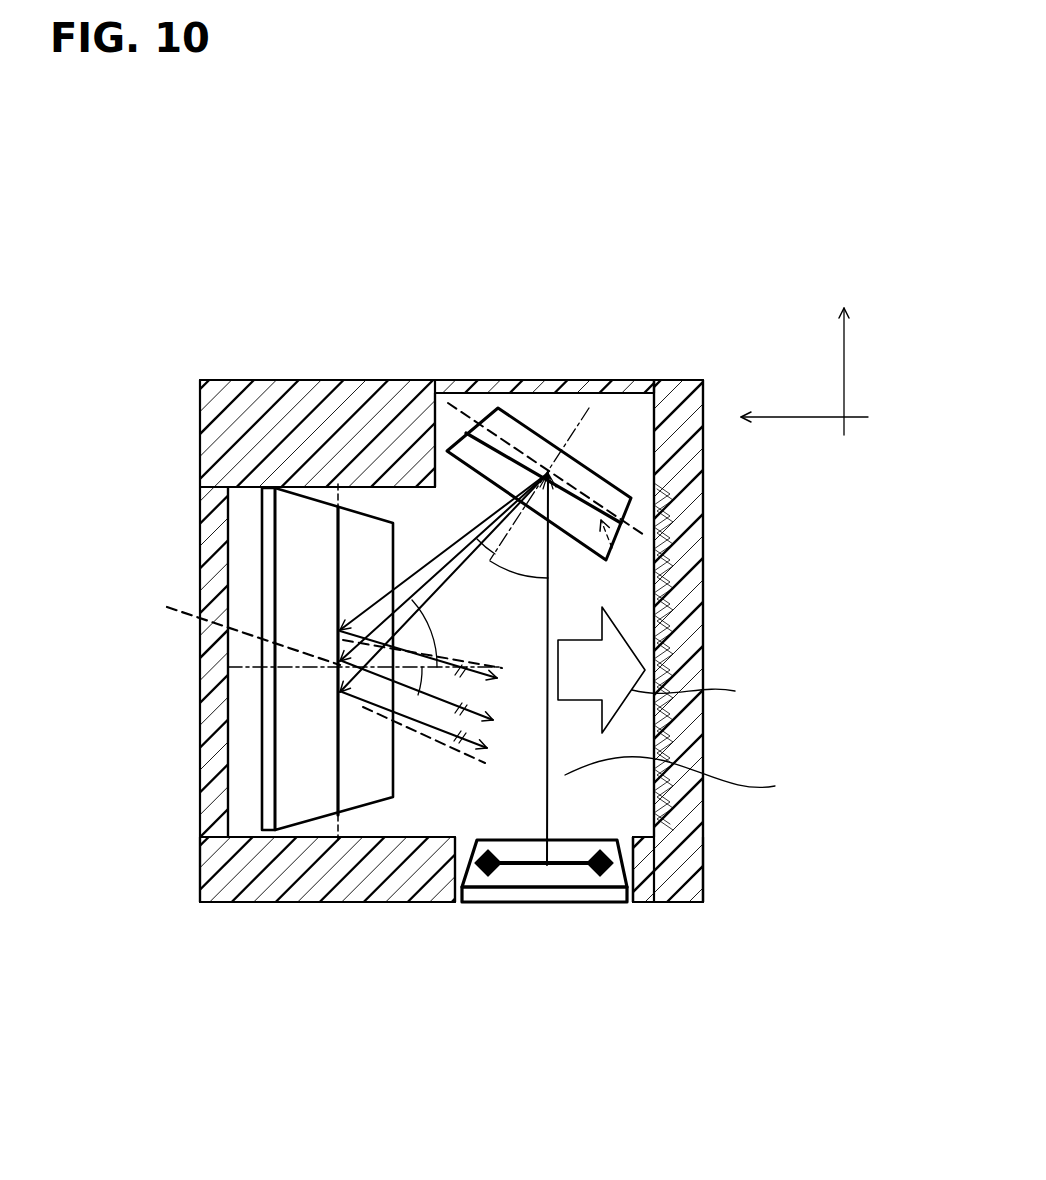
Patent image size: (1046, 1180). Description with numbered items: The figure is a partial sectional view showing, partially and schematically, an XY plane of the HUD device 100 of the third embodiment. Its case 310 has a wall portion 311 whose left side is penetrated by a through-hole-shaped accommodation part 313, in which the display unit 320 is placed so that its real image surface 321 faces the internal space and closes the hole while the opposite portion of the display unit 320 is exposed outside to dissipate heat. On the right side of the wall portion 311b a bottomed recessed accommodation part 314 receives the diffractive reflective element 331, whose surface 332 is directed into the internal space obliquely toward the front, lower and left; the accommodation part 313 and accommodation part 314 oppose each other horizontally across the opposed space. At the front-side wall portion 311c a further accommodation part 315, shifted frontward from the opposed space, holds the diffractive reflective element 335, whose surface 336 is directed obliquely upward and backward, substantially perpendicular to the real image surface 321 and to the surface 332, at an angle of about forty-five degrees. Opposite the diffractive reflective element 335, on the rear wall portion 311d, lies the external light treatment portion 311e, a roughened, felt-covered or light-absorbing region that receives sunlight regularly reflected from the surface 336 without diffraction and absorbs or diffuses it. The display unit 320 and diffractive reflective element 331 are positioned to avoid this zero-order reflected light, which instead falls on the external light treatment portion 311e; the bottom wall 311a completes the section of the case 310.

The spectroscopic camera / imaging device 100 is at (235, 342).
The case 310 is at (200, 432).
The wall portion 311 is at (200, 432).
The bottom wall of housing 311a is at (364, 888).
The wall portion 311b is at (412, 394).
The wall portion 311c is at (212, 578).
The wall portion 311d is at (690, 733).
The external light treatment portion 311e is at (660, 632).
The accommodation part 313 is at (632, 857).
The accommodation part 314 is at (644, 405).
The accommodation part 315 is at (255, 573).
The display unit 320 is at (575, 909).
The real image surface 321 is at (592, 849).
The diffractive reflective element 331 is at (631, 446).
The surface 332 is at (612, 558).
The diffractive reflective element 335 is at (262, 686).
The surface 336 is at (341, 742).